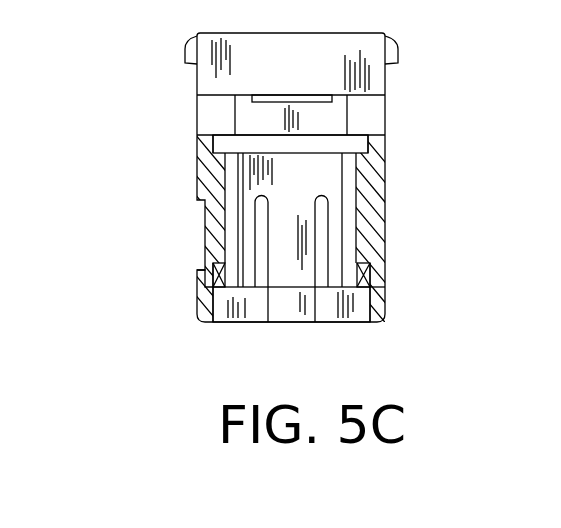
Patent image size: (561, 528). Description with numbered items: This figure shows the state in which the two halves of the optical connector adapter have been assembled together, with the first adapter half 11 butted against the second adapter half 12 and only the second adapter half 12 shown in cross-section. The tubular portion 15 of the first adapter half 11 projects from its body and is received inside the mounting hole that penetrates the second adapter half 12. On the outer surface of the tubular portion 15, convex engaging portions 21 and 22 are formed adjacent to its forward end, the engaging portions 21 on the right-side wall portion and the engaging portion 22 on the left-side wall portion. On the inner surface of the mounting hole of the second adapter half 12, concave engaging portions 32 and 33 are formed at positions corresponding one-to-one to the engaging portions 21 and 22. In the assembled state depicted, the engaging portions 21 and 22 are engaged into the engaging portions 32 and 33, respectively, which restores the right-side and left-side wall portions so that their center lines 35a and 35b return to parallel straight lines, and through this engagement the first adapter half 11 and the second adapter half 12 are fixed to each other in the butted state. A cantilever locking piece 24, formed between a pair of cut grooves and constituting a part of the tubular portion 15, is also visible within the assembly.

The first adapter half 11 is at (190, 116).
The second adapter half 12 is at (198, 233).
The tubular portion 15 is at (377, 145).
The engaging portion 21 is at (365, 283).
The engaging portion 22 is at (213, 288).
The locking piece 24 is at (291, 305).
The engaging portion 32 is at (368, 270).
The engaging portion 33 is at (213, 265).
The center line 35a is at (348, 171).
The center line 35b is at (238, 200).